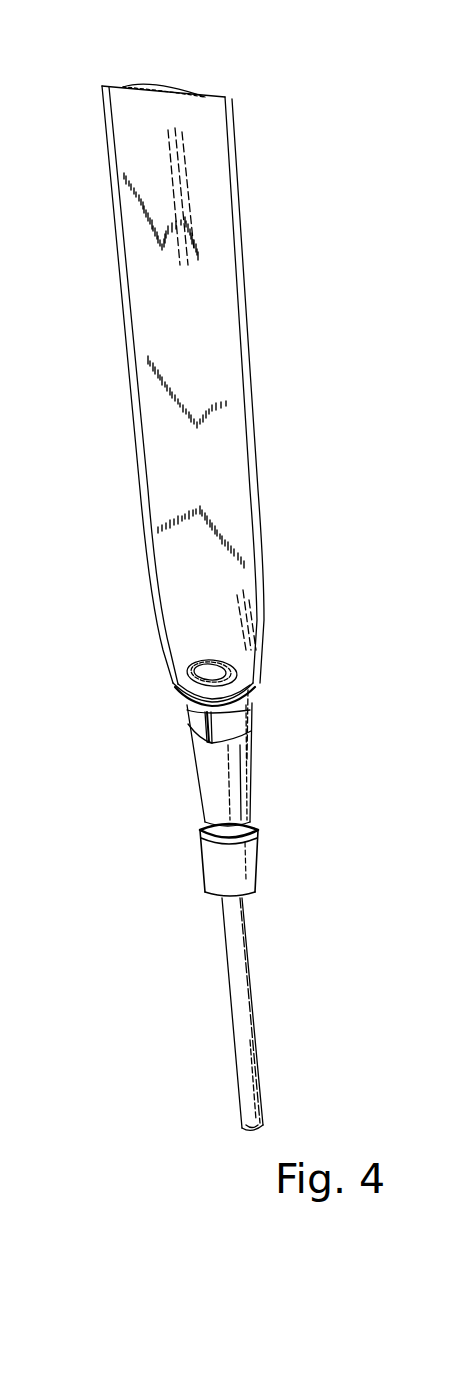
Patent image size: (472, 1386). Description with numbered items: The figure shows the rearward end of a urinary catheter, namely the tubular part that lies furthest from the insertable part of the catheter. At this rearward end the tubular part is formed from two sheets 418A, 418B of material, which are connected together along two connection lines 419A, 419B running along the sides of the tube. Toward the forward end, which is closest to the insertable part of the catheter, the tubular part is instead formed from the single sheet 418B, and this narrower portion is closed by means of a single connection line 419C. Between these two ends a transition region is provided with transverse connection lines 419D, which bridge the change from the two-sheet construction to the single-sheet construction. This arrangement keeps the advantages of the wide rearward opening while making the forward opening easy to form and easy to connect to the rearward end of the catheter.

The sheet 418A is at (232, 210).
The sheet 418B is at (172, 86).
The connection line 419A is at (138, 442).
The connection line 419B is at (245, 387).
The single connection line 419C is at (242, 730).
The transverse connection lines 419D is at (243, 717).